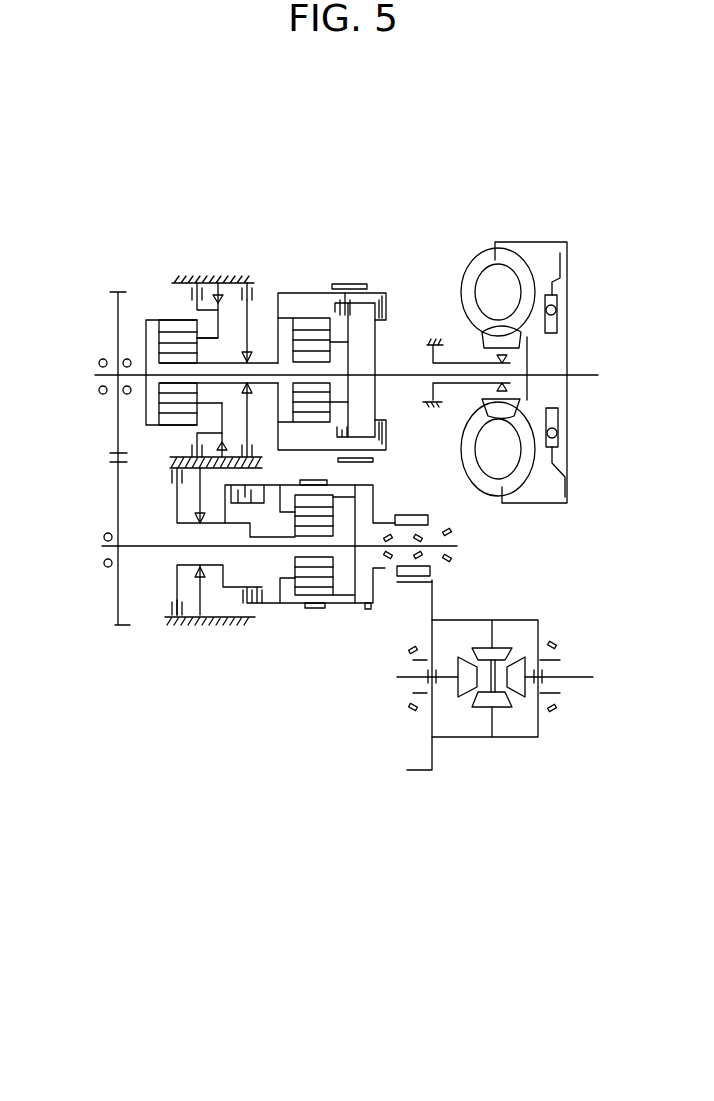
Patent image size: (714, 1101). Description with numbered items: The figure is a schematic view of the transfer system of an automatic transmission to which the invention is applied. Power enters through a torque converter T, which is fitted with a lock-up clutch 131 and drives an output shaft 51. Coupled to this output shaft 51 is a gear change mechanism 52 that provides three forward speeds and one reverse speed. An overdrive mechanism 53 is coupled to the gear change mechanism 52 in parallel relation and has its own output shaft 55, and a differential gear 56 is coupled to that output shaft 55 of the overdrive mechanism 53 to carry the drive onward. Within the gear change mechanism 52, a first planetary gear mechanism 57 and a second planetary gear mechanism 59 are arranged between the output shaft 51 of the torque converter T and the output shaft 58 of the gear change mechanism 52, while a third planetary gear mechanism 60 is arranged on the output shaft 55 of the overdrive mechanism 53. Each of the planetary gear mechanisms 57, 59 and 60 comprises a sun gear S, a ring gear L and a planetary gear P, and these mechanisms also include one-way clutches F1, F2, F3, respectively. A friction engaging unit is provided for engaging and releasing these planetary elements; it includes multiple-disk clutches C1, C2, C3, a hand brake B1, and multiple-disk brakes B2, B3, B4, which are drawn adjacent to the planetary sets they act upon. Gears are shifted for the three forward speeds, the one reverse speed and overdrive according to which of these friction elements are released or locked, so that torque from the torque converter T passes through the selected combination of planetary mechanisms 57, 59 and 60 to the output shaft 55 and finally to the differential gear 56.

The output shaft of the torque converter 51 is at (400, 374).
The gear change mechanism 52 is at (231, 209).
The overdrive mechanism 53 is at (214, 655).
The output shaft of the overdrive mechanism 55 is at (440, 552).
The differential gear 56 is at (550, 605).
The first planetary gear mechanism 57 is at (299, 309).
The output shaft of the gear change mechanism 58 is at (104, 374).
The second planetary gear mechanism 59 is at (165, 303).
The third planetary gear mechanism 60 is at (312, 609).
The lock-up clutch 131 is at (562, 282).
The torque converter T is at (529, 209).
The ring gear L is at (146, 320).
The planetary gear P is at (167, 335).
The sun gear S is at (163, 358).
The hand brake B1 is at (360, 286).
The multiple-disk brake B2 is at (236, 283).
The multiple-disk brake B3 is at (198, 286).
The multiple-disk brake B4 is at (172, 610).
The multiple-disk clutch C1 is at (345, 298).
The multiple-disk clutch C2 is at (392, 296).
The multiple-disk clutch C3 is at (232, 596).
The one-way clutch F1 is at (246, 352).
The one-way clutch F2 is at (217, 283).
The one-way clutch F3 is at (193, 573).